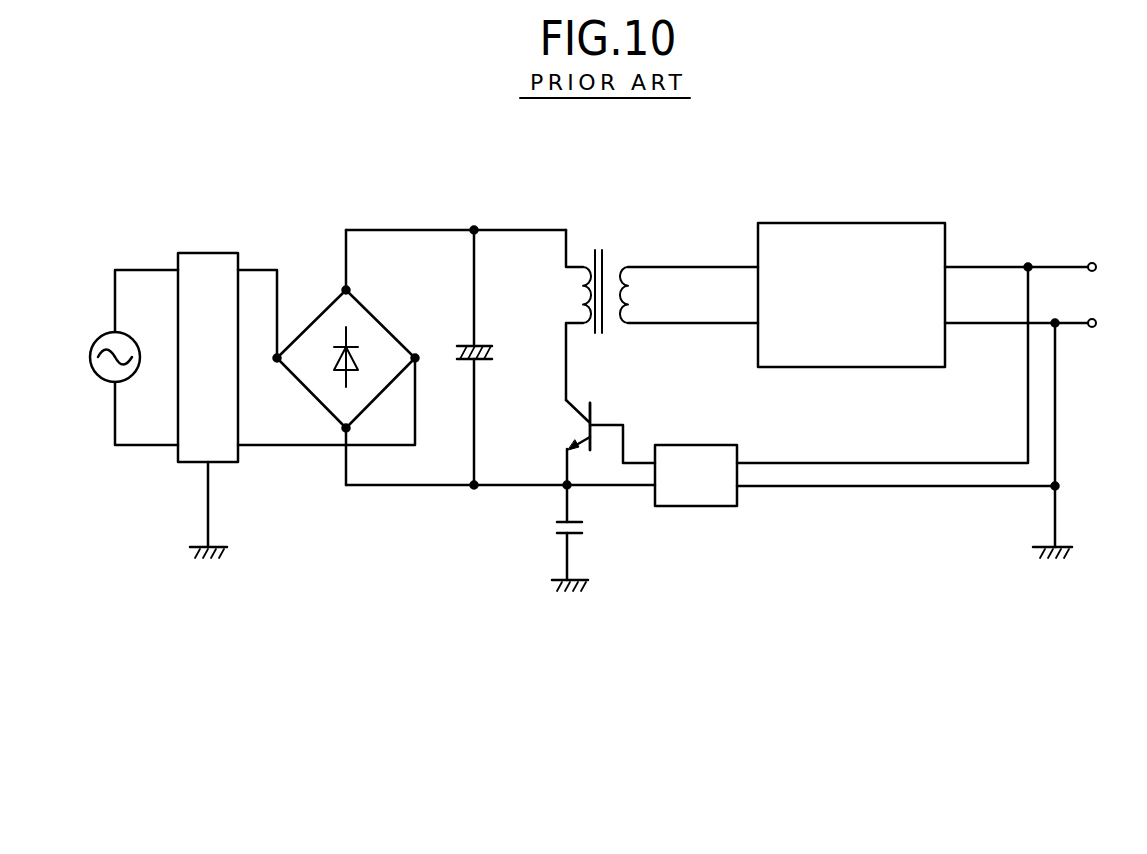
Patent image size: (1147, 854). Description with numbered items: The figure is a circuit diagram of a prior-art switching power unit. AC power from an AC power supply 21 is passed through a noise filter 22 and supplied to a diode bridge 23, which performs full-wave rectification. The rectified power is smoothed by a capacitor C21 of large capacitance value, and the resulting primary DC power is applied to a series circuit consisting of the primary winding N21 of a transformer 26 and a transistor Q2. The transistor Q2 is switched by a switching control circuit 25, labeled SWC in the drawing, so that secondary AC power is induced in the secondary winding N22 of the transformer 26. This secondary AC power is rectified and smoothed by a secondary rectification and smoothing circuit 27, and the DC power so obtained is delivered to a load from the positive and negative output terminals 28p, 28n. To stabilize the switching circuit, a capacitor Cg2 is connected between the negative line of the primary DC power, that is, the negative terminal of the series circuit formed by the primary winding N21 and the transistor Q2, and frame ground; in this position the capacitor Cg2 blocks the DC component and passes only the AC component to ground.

The AC power supply 21 is at (102, 338).
The noise filter 22 is at (207, 253).
The diode bridge 23 is at (377, 320).
The switching control circuit (SWC) 25 is at (693, 507).
The transformer 26 is at (630, 299).
The secondary rectification and smoothing circuit 27 is at (862, 223).
The positive output terminal 28p is at (1092, 262).
The negative output terminal 28n is at (1092, 327).
The capacitor C21 is at (499, 357).
The primary winding N21 is at (547, 315).
The secondary winding N22 is at (689, 295).
The transistor Q2 is at (592, 442).
The capacitor Cg2 is at (553, 543).